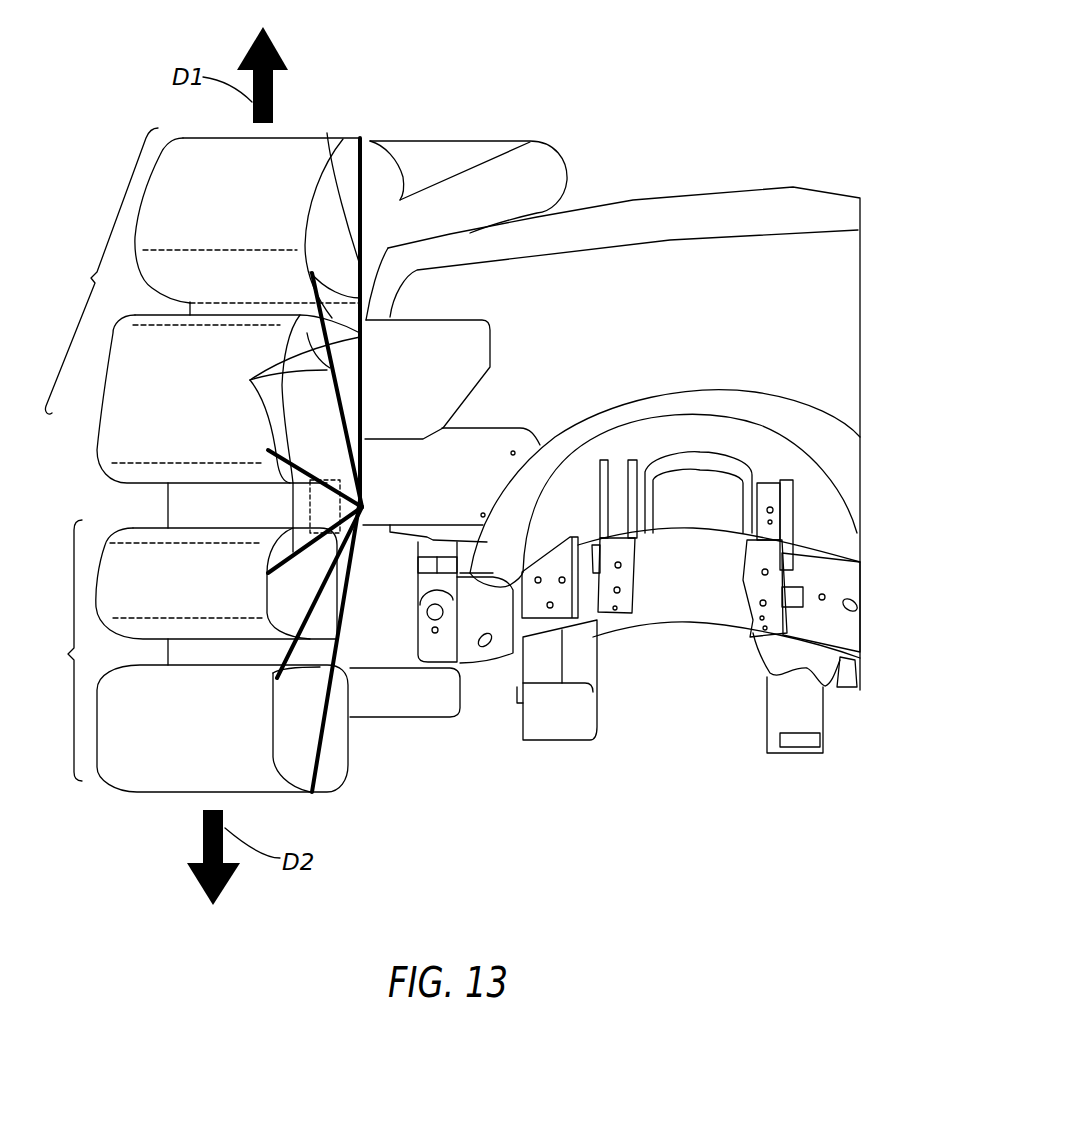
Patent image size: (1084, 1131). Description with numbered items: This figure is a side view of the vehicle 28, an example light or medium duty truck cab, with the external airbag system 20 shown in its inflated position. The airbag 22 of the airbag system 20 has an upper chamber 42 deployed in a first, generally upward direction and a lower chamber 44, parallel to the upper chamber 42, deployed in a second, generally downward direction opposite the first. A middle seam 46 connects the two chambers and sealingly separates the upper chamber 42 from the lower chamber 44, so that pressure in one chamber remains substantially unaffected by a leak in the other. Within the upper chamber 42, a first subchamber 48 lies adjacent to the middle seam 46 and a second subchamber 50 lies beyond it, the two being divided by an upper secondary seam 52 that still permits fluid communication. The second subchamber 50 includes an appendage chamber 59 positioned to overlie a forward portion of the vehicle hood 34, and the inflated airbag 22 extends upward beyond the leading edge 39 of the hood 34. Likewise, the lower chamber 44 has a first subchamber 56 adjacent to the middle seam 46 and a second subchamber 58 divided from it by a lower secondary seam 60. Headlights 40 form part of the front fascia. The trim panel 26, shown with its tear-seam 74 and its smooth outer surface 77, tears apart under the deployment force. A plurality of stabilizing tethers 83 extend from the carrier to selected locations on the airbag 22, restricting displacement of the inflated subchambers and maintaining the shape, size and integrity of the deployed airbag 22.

The external airbag system 20 is at (470, 79).
The airbag 22 is at (540, 141).
The trim panel 26 is at (503, 427).
The vehicle 28 is at (675, 108).
The vehicle hood 34 is at (628, 203).
The leading edge 39 is at (327, 133).
The headlights 40 is at (487, 330).
The upper chamber 42 is at (101, 271).
The lower chamber 44 is at (60, 650).
The middle seam 46 is at (165, 512).
The first subchamber of the upper chamber 48 is at (107, 472).
The second subchamber of the upper chamber 50 is at (177, 138).
The upper secondary seam 52 is at (190, 307).
The first subchamber of the lower chamber 56 is at (111, 526).
The second subchamber of the lower chamber 58 is at (152, 793).
The appendage chamber 59 is at (480, 140).
The lower secondary seam 60 is at (168, 660).
The tear-seam 74 is at (355, 505).
The outer surface 77 is at (478, 477).
The stabilizing tethers 83 is at (250, 380).